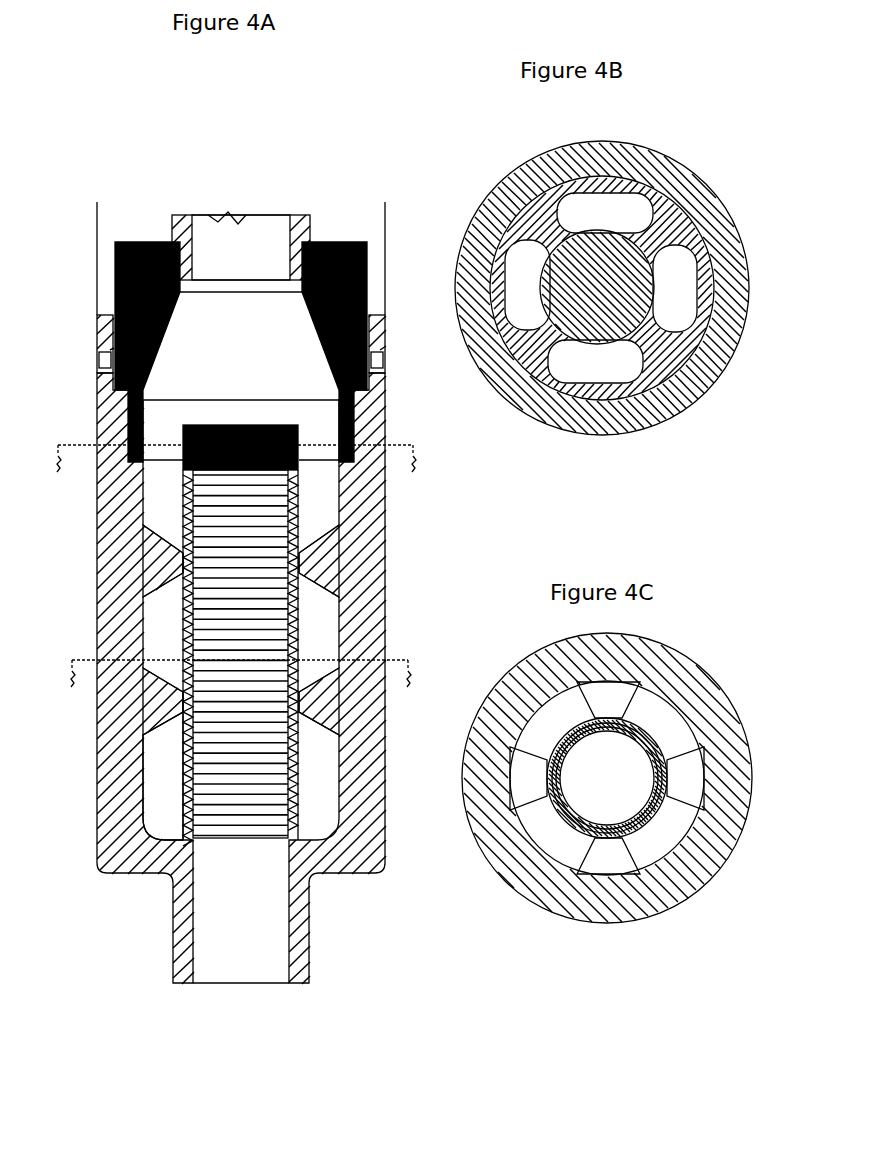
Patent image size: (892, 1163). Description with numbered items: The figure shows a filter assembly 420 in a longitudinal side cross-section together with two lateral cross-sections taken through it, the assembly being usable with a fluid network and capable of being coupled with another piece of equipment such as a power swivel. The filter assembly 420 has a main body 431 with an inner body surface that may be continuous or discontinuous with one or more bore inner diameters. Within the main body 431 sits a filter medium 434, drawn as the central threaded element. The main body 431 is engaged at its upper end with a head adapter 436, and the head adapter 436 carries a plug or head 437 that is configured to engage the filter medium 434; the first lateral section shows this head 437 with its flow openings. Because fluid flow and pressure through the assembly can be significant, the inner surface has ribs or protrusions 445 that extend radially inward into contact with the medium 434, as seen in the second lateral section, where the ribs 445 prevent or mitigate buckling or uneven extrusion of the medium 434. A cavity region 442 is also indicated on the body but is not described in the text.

In FIG. 4A, the filter assembly 420 is at (75, 912).
In FIG. 4A, the main body 431 is at (118, 597).
In FIG. 4A, the filter medium 434 is at (245, 835).
In FIG. 4A, the head adapter 436 is at (160, 292).
In FIG. 4B, the plug or head 437 is at (570, 275).
In FIG. 4A, the cavity 442 is at (143, 776).
In FIG. 4A, the ribs or protrusions 445 is at (310, 567).
In FIG. 4C, the ribs or protrusions 445 is at (535, 778).